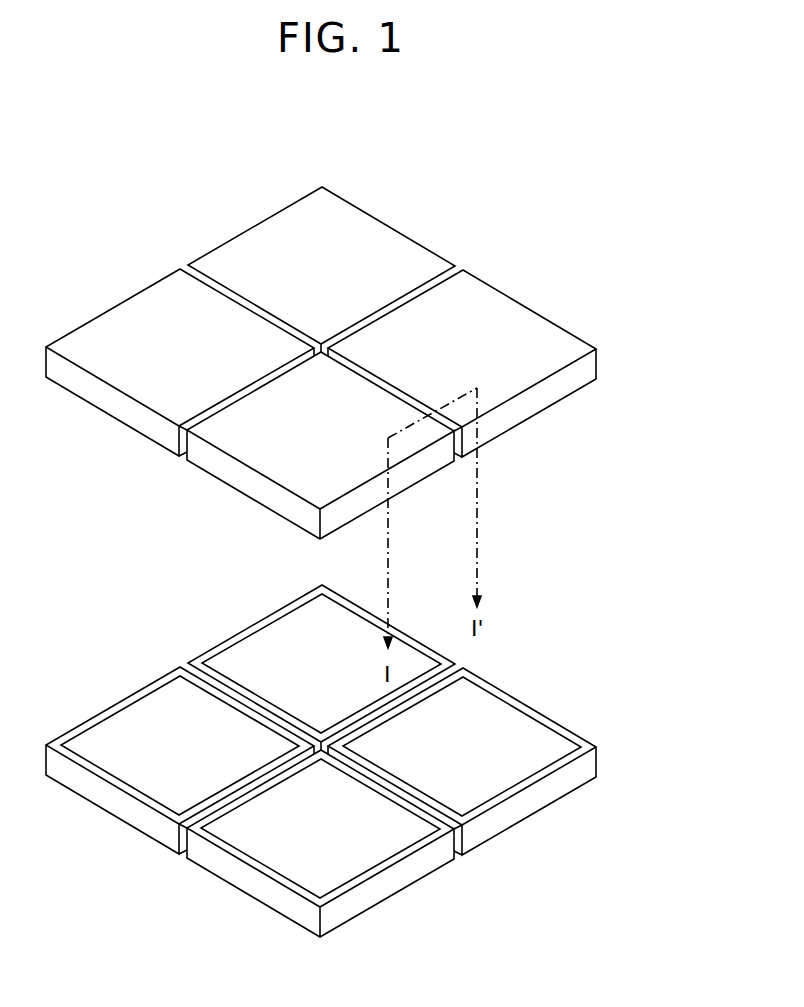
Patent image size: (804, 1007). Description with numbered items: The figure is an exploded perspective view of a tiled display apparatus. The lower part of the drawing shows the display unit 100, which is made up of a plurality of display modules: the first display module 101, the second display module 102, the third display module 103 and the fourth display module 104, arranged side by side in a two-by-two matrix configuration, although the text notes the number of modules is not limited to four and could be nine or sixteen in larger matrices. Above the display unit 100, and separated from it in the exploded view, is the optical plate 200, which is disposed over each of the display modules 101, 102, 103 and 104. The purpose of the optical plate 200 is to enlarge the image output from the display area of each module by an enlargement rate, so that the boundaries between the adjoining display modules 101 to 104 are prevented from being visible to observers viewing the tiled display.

The display unit 100 is at (378, 761).
The first display module 101 is at (357, 878).
The second display module 102 is at (503, 795).
The third display module 103 is at (98, 714).
The fourth display module 104 is at (238, 634).
The optical plate 200 is at (596, 368).